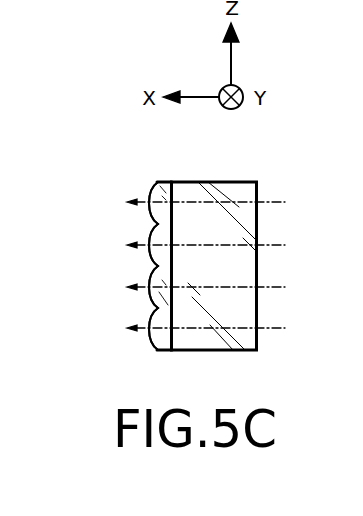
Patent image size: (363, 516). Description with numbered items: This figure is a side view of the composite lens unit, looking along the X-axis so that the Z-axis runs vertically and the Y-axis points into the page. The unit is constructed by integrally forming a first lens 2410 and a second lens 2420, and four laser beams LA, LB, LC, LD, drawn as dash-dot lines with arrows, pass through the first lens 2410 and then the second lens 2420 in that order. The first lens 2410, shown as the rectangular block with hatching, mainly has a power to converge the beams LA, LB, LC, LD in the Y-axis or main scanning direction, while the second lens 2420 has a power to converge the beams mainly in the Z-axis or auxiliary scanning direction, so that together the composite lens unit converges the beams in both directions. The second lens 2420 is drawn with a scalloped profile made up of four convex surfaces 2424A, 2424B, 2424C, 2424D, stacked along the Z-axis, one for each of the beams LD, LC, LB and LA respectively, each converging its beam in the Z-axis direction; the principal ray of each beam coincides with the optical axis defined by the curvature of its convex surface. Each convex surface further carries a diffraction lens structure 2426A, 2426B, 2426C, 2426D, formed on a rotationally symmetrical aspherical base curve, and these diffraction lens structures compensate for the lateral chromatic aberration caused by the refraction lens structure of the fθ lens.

The first lens 2410 is at (220, 181).
The second lens 2420 is at (157, 343).
The convex surface 2424A is at (150, 316).
The convex surface 2424B is at (150, 274).
The convex surface 2424C is at (150, 232).
The convex surface 2424D is at (150, 190).
The diffraction lens structure 2426A is at (157, 336).
The diffraction lens structure 2426B is at (149, 299).
The diffraction lens structure 2426C is at (149, 257).
The diffraction lens structure 2426D is at (149, 215).
The laser beam LA is at (277, 328).
The laser beam LB is at (277, 287).
The laser beam LC is at (277, 245).
The laser beam LD is at (277, 202).